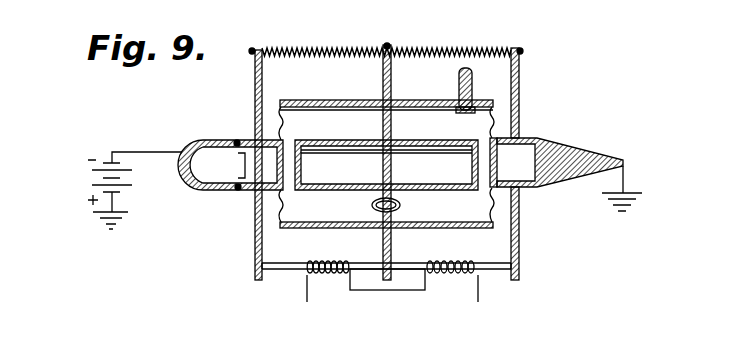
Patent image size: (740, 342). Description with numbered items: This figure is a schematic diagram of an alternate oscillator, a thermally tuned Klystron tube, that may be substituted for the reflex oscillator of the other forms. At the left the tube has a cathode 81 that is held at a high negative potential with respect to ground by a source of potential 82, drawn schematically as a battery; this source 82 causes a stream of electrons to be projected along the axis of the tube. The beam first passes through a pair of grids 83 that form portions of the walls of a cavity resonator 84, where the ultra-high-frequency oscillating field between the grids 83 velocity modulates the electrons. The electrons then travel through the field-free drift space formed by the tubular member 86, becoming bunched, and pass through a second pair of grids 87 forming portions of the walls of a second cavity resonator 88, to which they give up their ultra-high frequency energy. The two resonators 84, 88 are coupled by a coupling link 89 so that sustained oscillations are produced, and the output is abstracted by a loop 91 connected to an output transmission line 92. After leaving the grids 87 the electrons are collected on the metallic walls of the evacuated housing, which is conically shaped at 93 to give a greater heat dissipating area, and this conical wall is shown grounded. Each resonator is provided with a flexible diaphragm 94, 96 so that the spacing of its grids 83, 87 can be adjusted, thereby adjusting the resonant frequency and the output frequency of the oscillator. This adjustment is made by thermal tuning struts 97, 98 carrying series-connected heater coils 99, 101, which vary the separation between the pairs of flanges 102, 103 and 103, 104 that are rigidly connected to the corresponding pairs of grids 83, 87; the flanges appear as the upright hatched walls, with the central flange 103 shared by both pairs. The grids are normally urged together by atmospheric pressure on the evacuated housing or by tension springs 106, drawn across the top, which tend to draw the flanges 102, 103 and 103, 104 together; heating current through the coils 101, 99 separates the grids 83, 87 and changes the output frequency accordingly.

The cathode 81 is at (240, 165).
The source of potential 82 is at (81, 194).
The pair of grids 83 is at (308, 143).
The cavity resonator 84 is at (320, 213).
The tubular member 86 is at (441, 142).
The second pair of grids 87 is at (508, 138).
The second cavity resonator 88 is at (442, 213).
The coupling link 89 is at (372, 206).
The loop 91 is at (473, 108).
The output transmission line 92 is at (458, 74).
The conically shaped housing wall 93 is at (584, 149).
The flexible diaphragm 94 is at (282, 117).
The flexible diaphragm 96 is at (497, 115).
The thermal tuning strut 97 is at (280, 273).
The thermal tuning strut 98 is at (497, 277).
The heater coil 99 is at (460, 277).
The heater coil 101 is at (330, 277).
The flange 102 is at (255, 230).
The flange 103 is at (383, 250).
The flange 104 is at (519, 235).
The tension springs 106 is at (339, 34).